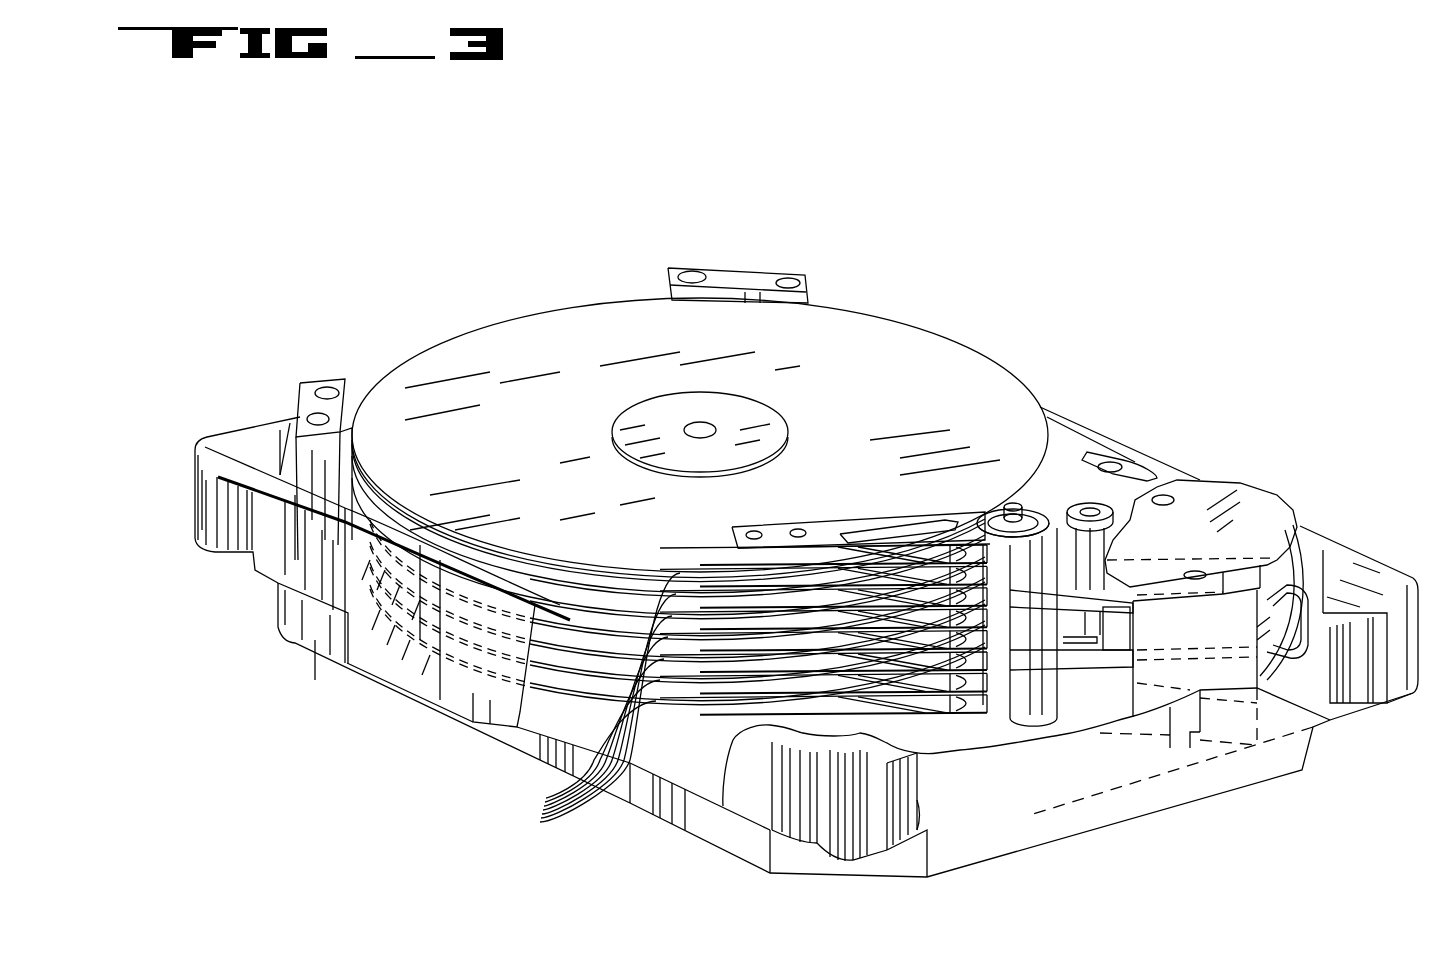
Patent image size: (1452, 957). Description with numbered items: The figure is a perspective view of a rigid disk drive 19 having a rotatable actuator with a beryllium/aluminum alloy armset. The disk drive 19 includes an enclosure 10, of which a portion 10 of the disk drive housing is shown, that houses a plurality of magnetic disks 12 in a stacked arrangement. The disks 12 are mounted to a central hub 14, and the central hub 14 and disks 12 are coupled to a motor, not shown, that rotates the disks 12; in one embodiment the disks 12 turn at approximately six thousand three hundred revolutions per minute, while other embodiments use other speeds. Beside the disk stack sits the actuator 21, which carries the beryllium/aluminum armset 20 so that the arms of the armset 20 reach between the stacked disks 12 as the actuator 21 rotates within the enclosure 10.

The enclosure 10 is at (1317, 533).
The magnetic disks 12 is at (598, 697).
The central hub 14 is at (707, 427).
The disk drive 19 is at (782, 488).
The beryllium/aluminum armset 20 is at (987, 510).
The actuator 21 is at (950, 722).